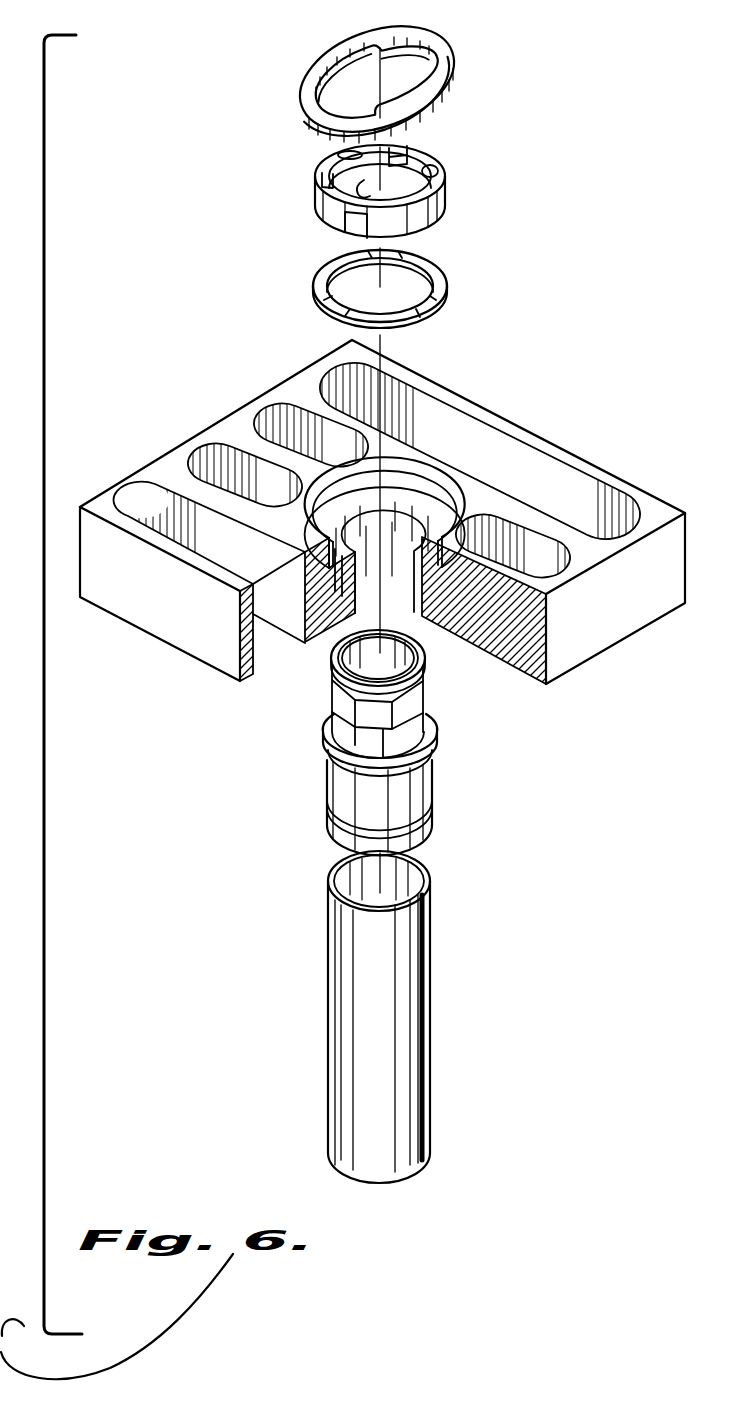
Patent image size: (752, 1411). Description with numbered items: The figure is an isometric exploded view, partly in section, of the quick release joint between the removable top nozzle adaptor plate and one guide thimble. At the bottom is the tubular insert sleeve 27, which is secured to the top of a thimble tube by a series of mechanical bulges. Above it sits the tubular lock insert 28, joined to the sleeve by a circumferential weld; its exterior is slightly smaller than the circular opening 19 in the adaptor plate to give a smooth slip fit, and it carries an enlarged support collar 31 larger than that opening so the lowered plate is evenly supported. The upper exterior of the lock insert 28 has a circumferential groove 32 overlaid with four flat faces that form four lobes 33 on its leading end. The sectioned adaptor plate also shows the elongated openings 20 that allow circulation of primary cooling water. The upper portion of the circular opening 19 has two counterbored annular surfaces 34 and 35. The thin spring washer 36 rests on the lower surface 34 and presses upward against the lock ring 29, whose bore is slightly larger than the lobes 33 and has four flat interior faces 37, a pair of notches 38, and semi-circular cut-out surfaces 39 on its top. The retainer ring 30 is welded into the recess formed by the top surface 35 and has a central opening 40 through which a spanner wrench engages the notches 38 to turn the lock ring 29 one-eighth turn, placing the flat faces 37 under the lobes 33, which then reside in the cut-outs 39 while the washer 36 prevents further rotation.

The central opening 40 is at (362, 80).
The retainer ring 30 is at (446, 97).
The notches 38 is at (400, 156).
The semi-circular cut-out surfaces 39 is at (326, 187).
The flat interior faces 37 is at (362, 176).
The lock ring 29 is at (424, 224).
The spring washer 36 is at (432, 305).
The elongated openings 20 is at (596, 490).
The top annular counterbored surface 35 is at (437, 516).
The annular surface 34 is at (338, 558).
The circular opening 19 is at (405, 605).
The lobes 33 is at (424, 677).
The circumferential groove 32 is at (344, 698).
The support collar 31 is at (434, 765).
The tubular lock insert 28 is at (433, 806).
The tubular insert sleeve 27 is at (420, 950).